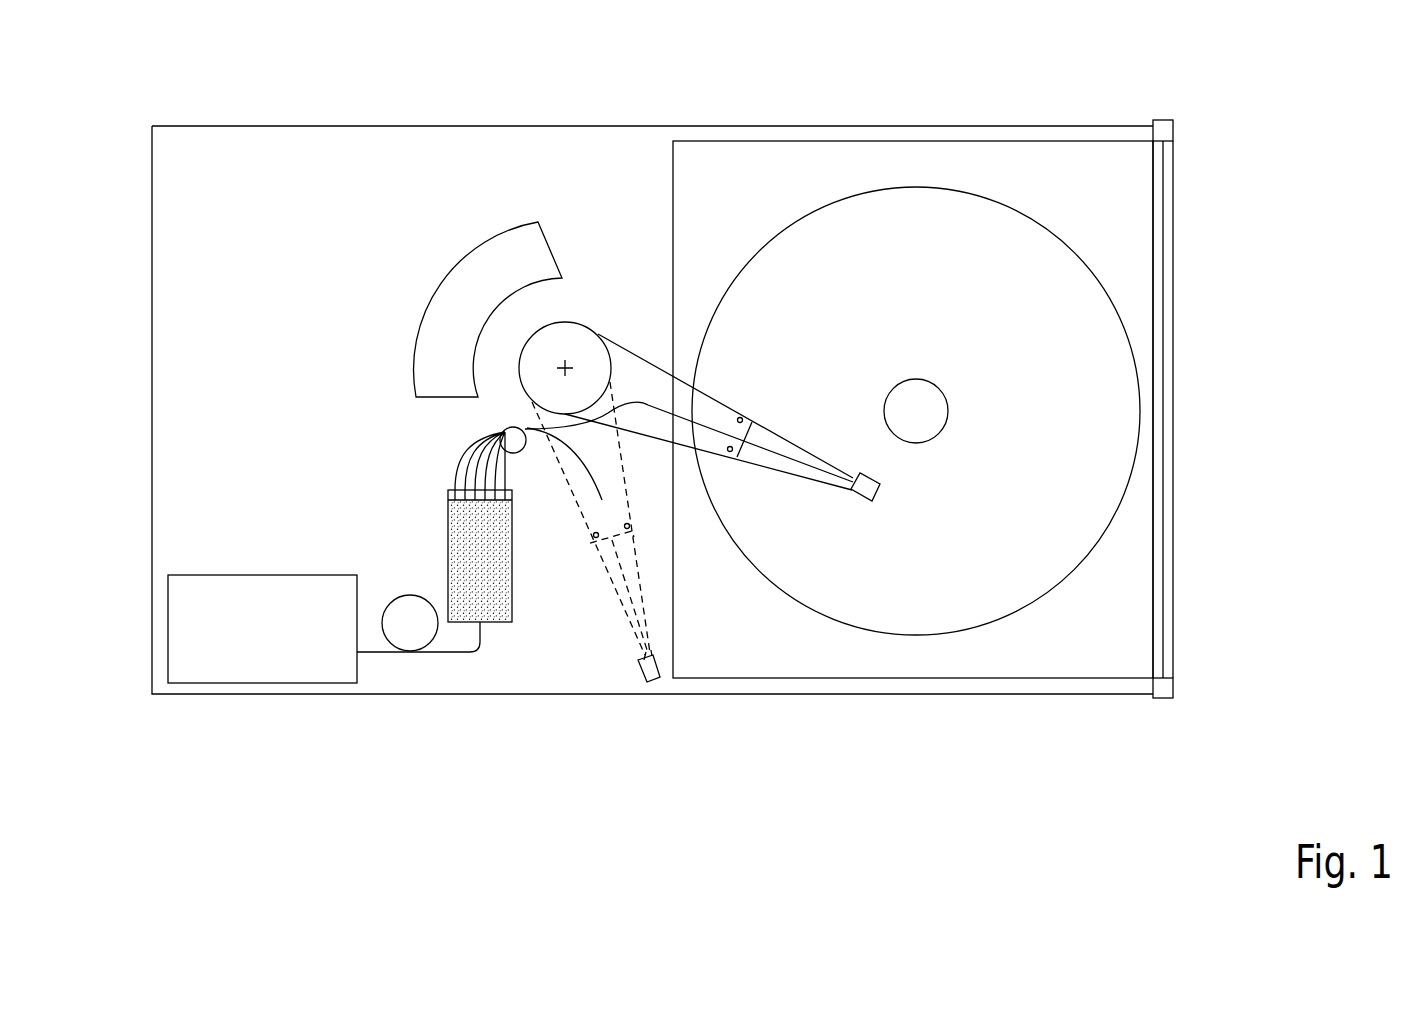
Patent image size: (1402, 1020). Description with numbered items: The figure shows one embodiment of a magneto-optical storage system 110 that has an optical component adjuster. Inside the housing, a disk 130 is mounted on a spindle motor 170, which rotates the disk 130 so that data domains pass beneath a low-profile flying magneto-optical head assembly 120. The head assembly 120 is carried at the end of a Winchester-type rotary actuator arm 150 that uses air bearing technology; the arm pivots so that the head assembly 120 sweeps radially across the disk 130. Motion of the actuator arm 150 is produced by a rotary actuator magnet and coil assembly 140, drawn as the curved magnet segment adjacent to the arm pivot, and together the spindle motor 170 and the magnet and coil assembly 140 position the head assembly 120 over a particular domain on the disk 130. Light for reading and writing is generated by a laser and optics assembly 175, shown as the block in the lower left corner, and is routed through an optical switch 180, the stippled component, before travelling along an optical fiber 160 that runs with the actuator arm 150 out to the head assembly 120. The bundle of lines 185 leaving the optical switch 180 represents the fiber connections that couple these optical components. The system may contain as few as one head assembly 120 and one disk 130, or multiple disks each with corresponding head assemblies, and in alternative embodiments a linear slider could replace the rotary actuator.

The storage system 110 is at (1144, 78).
The head assembly 120 is at (882, 499).
The disk 130 is at (1106, 280).
The rotary actuator magnet and coil assembly 140 is at (521, 262).
The rotary actuator arm 150 is at (733, 400).
The optical fiber 160 is at (784, 452).
The spindle motor 170 is at (948, 388).
The laser and optics assembly 175 is at (236, 666).
The optical switch 180 is at (522, 553).
The flex cable wires 185 is at (444, 449).